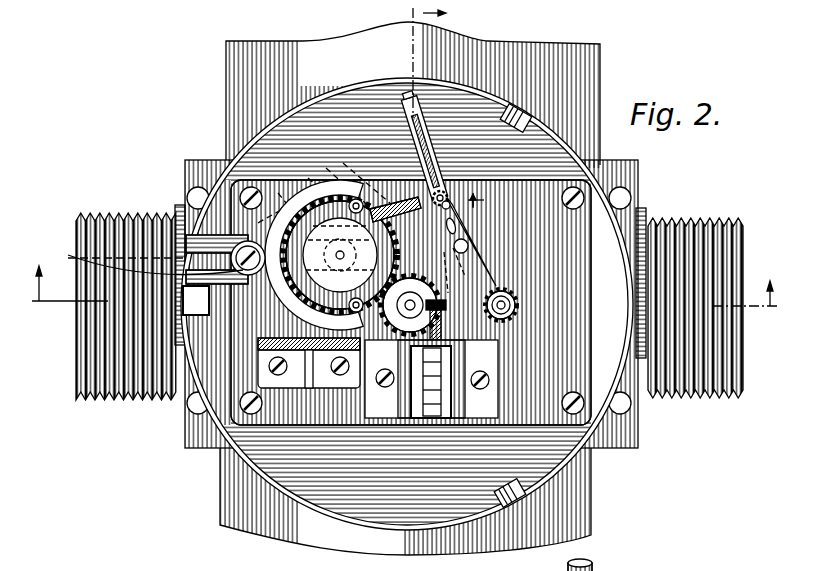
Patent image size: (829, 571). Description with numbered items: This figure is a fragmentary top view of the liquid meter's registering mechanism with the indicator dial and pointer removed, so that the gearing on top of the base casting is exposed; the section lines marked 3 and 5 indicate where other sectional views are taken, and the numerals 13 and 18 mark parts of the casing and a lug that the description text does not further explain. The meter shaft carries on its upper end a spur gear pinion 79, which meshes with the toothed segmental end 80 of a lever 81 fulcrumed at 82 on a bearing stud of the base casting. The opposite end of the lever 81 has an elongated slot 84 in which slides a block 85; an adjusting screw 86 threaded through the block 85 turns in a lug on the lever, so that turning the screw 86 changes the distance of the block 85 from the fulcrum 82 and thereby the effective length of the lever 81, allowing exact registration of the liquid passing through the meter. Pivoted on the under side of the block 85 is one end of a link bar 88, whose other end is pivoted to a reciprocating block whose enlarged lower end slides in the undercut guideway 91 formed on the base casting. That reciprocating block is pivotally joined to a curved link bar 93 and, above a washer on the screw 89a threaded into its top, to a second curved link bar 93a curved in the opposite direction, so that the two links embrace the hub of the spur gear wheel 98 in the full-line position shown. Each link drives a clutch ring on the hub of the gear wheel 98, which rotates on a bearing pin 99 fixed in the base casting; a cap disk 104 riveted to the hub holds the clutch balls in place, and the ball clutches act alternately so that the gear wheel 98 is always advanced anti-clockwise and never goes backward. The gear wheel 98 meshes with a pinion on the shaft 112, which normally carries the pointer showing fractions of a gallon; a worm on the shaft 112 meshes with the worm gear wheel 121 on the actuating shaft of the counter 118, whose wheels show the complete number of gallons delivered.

The section line 3 is at (420, 63).
The section line 5 is at (402, 292).
The casing plate 13 is at (214, 212).
The lug 18 is at (485, 200).
The spur gear pinion 79 is at (490, 308).
The toothed segmental end 80 is at (497, 270).
The lever 81 is at (448, 220).
The fulcrum 82 is at (460, 236).
The elongated slot 84 is at (470, 186).
The block 85 is at (441, 194).
The adjusting screw 86 is at (425, 164).
The link bar 88 is at (407, 173).
The screw 89a is at (606, 553).
The undercut guideway 91 is at (195, 226).
The curved link bar 93 is at (277, 302).
The curved link bar 93a is at (345, 195).
The spur gear wheel 98 is at (330, 260).
The bearing pin 99 is at (334, 250).
The cap disk 104 is at (340, 255).
The shaft 112 is at (380, 315).
The counter 118 is at (443, 363).
The worm gear wheel 121 is at (427, 290).